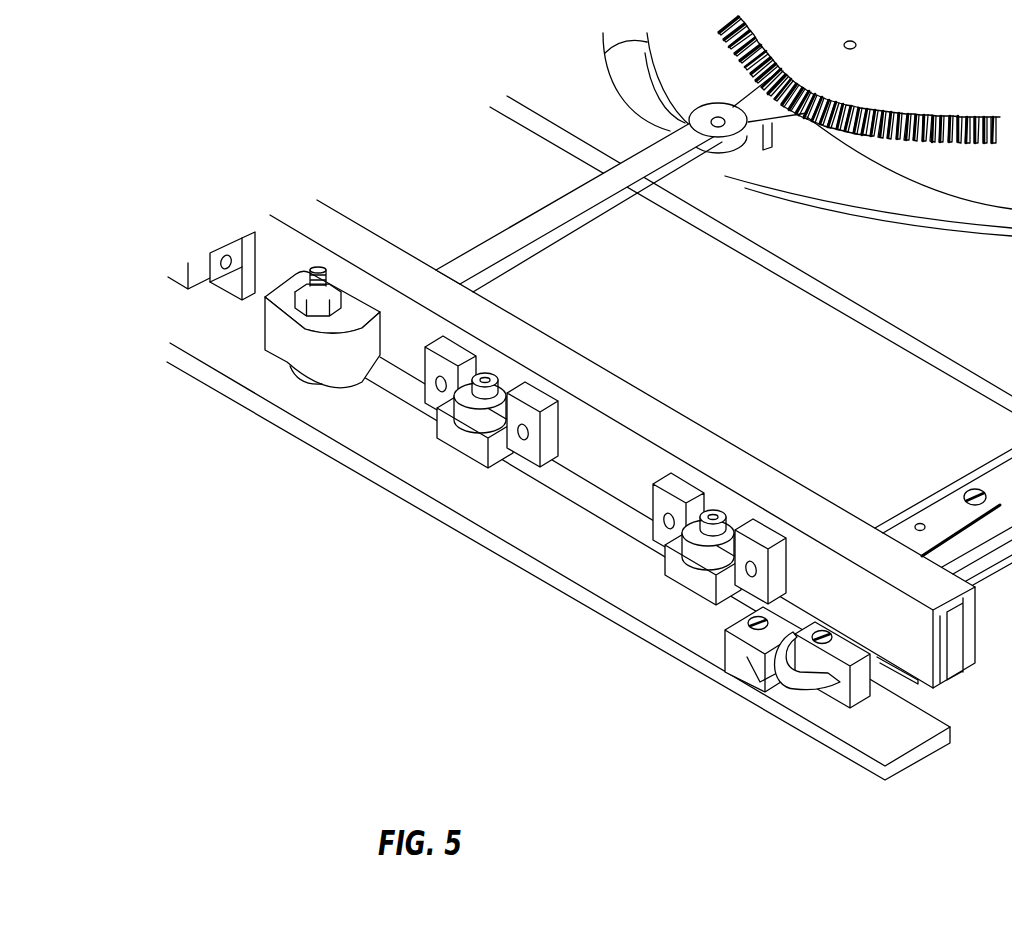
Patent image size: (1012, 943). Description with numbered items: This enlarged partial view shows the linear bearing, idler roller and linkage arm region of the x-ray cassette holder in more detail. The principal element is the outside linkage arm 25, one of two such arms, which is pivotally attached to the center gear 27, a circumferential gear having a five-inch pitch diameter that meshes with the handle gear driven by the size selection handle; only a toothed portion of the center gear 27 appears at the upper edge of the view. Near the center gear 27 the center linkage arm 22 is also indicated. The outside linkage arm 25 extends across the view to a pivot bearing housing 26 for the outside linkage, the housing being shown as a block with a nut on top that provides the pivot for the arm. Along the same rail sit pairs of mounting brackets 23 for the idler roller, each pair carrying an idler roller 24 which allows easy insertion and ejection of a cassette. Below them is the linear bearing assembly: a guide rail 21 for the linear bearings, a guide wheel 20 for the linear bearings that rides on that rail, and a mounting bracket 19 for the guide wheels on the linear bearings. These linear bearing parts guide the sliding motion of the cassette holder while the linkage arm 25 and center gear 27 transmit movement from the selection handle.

The mounting bracket for guide wheels on linear bearings 19 is at (833, 665).
The guide wheel for linear bearings 20 is at (797, 683).
The guide rail for linear bearings 21 is at (720, 652).
The center linkage arm 22 is at (763, 143).
The mounting bracket for idler roller 23 is at (537, 443).
The idler roller 24 is at (458, 420).
The outside linkage arm 25 is at (507, 258).
The pivot bearing housing for outside linkage 26 is at (297, 330).
The center gear 27 is at (877, 133).